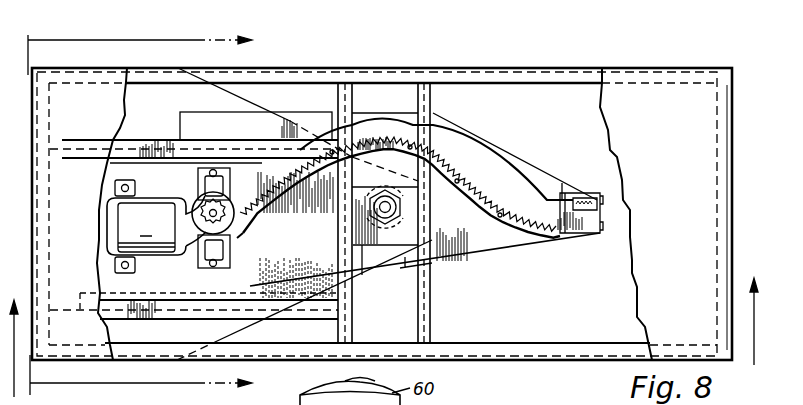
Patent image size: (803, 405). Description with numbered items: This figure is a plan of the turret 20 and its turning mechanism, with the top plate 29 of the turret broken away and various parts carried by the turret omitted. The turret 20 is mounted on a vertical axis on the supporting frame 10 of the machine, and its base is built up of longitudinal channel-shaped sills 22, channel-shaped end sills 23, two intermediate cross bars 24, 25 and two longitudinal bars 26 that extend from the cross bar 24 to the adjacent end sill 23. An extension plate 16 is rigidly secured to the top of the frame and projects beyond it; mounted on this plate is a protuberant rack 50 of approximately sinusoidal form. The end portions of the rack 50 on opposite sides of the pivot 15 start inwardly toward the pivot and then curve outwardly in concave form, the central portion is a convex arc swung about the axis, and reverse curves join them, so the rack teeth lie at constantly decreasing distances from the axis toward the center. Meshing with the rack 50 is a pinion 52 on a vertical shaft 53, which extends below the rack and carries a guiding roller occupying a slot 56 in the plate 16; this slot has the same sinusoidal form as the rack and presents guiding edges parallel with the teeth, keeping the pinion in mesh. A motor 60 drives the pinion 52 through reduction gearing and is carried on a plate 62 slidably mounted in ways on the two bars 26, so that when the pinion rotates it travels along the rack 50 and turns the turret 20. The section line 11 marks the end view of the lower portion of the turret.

The supporting frame 10 is at (386, 325).
The section line 11— 11 is at (156, 216).
The pivot 15 is at (385, 207).
The extension plate 16 is at (425, 251).
The turret 20 is at (535, 68).
The longitudinal channel-shaped sills 22 is at (532, 83).
The end sills 23 is at (52, 205).
The cross bar 24 is at (346, 291).
The cross bar 25 is at (431, 293).
The longitudinal bars 26 is at (160, 328).
The top plate 29 is at (744, 205).
The rack 50 is at (250, 240).
The pinion 52 is at (282, 200).
The vertical shaft 53 is at (205, 207).
The slot 56 is at (462, 152).
The motor 60 is at (156, 226).
The plate 62 is at (185, 228).